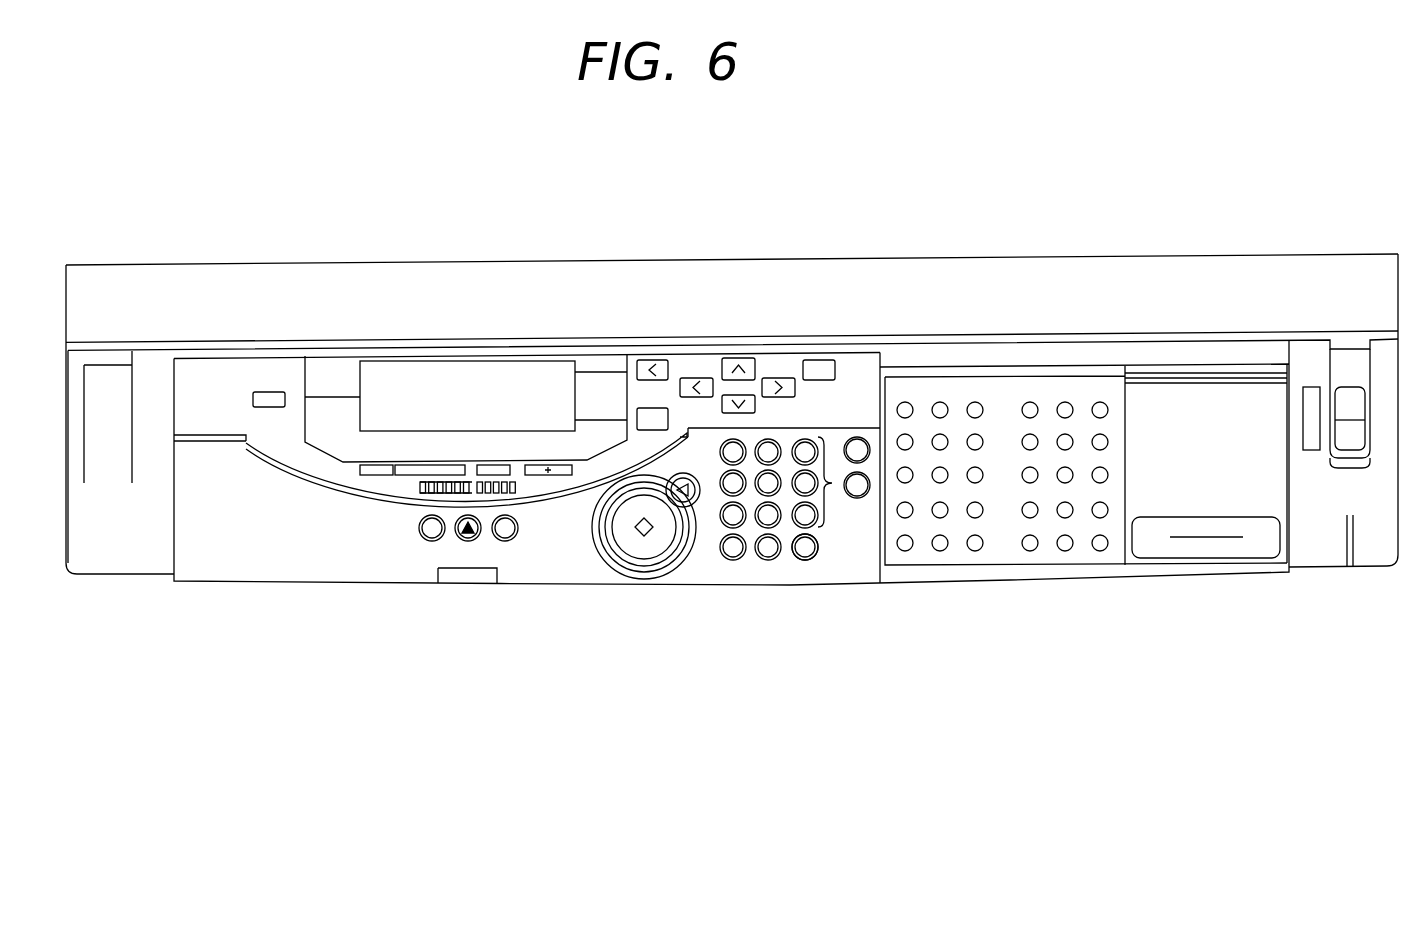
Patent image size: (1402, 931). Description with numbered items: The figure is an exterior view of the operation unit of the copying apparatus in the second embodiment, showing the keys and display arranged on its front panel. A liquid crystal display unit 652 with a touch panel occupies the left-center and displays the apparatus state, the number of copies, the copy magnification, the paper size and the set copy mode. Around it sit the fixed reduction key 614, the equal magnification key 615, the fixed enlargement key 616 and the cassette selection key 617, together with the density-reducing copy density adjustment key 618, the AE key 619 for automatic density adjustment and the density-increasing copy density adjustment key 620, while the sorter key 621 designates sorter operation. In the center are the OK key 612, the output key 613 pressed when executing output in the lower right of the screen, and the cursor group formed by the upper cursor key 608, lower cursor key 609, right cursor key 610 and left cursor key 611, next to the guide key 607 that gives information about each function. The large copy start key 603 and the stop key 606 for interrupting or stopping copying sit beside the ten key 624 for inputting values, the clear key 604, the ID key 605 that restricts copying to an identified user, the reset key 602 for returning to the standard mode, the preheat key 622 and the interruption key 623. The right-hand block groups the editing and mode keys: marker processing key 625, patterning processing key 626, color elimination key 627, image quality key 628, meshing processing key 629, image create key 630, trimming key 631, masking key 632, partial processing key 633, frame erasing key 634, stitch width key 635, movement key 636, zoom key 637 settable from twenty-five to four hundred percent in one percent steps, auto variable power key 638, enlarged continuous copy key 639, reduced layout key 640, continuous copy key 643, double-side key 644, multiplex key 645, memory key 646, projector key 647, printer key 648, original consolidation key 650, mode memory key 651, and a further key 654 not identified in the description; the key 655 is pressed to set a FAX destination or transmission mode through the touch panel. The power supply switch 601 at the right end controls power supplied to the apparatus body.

The power supply switch 601 is at (1350, 422).
The reset key 602 is at (565, 476).
The copy start key 603 is at (638, 556).
The clear key 604 is at (734, 560).
The ID key 605 is at (798, 560).
The stop key 606 is at (697, 505).
The guide key 607 is at (822, 360).
The upper cursor key 608 is at (735, 358).
The lower cursor key 609 is at (748, 395).
The right cursor key 610 is at (788, 378).
The left cursor key 611 is at (690, 378).
The OK key 612 is at (652, 360).
The output key 613 is at (641, 408).
The fixed reduction key 614 is at (358, 478).
The equal magnification key 615 is at (392, 478).
The fixed enlargement key 616 is at (430, 478).
The cassette selection key 617 is at (505, 478).
The copy density adjustment key 618 is at (432, 545).
The AE key 619 is at (468, 543).
The copy density adjustment key 620 is at (505, 543).
The sorter key 621 is at (282, 390).
The preheat key 622 is at (860, 438).
The interruption key 623 is at (862, 498).
The ten key 624 is at (836, 486).
The marker processing key 625 is at (905, 403).
The patterning processing key 626 is at (940, 403).
The color elimination key 627 is at (975, 403).
The image quality key 628 is at (1030, 403).
The meshing processing key 629 is at (1065, 403).
The image create key 630 is at (1100, 403).
The trimming key 631 is at (905, 435).
The masking key 632 is at (940, 435).
The partial processing key 633 is at (975, 435).
The frame erasing key 634 is at (1030, 435).
The stitch width key 635 is at (1065, 435).
The movement key 636 is at (1100, 435).
The zoom key 637 is at (905, 468).
The auto variable power key 638 is at (940, 468).
The enlarged continuous copy key 639 is at (975, 468).
The reduced layout key 640 is at (1030, 468).
The continuous copy key 643 is at (905, 503).
The double-side key 644 is at (940, 503).
The multiplex key 645 is at (975, 503).
The memory key 646 is at (1030, 503).
The projector key 647 is at (1065, 503).
The printer key 648 is at (1100, 503).
The original consolidation key 650 is at (940, 536).
The mode memory key 651 is at (975, 536).
The liquid crystal display unit 652 is at (447, 360).
The indicator lamp 654 is at (1100, 536).
The FAX key 655 is at (1030, 552).